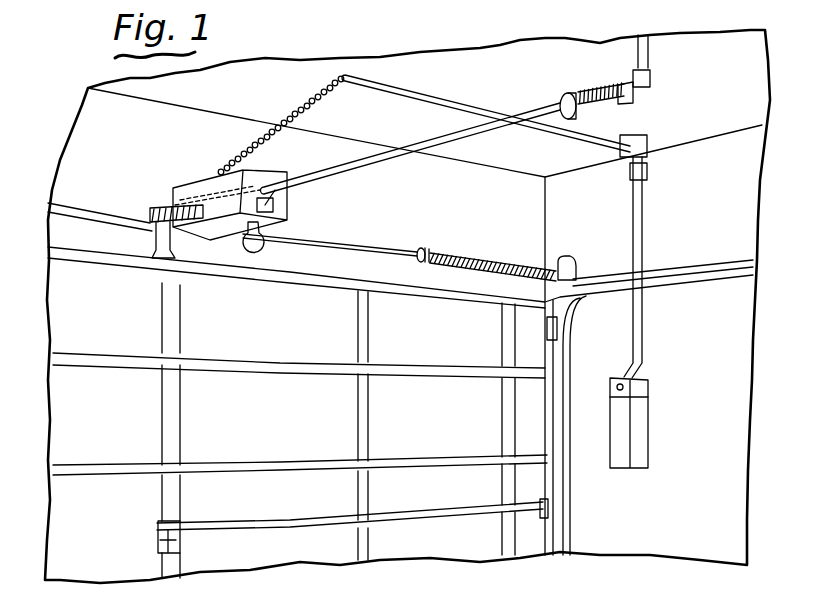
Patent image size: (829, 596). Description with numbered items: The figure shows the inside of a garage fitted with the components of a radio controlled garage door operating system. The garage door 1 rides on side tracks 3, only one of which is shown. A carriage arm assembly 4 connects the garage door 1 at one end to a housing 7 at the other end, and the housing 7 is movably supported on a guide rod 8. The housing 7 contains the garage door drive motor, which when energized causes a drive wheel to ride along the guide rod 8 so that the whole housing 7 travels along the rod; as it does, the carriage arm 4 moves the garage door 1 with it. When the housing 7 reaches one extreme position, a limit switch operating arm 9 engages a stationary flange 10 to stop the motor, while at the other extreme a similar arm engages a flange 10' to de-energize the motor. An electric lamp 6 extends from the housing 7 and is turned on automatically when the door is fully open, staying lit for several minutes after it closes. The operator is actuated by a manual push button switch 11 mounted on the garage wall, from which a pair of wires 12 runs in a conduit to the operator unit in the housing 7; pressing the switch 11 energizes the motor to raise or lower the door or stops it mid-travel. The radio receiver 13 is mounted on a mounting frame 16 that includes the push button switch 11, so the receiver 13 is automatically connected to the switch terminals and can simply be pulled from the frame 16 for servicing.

The garage door 1 is at (62, 423).
The side tracks 3 is at (673, 273).
The carriage arm assembly 4 is at (162, 238).
The electric lamp 6 is at (255, 251).
The housing 7 is at (207, 178).
The guide rod 8 is at (337, 173).
The limit switch operating arm 9 is at (275, 201).
The stationary flange 10 is at (601, 77).
The flange 10' is at (204, 167).
The manual push button switch 11 is at (640, 376).
The pair of wires 12 is at (275, 118).
The radio receiver 13 is at (638, 418).
The mounting frame 16 is at (648, 397).